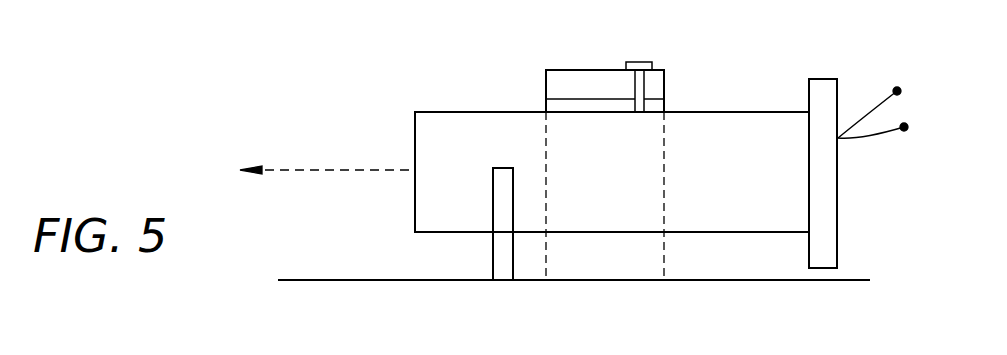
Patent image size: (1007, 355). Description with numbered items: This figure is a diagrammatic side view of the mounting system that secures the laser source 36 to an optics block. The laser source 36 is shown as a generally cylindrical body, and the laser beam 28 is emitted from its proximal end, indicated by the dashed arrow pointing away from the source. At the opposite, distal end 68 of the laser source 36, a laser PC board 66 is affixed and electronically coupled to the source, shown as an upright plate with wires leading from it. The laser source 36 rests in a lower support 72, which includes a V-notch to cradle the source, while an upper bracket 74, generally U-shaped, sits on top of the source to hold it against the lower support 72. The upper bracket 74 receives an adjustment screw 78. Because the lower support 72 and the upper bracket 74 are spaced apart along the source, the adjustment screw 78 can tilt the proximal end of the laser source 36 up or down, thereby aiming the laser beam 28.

The laser beam 28 is at (335, 170).
The laser source 36 is at (440, 120).
The laser PC board 66 is at (822, 88).
The distal end 68 is at (809, 246).
The lower support 72 is at (500, 259).
The upper bracket 74 is at (566, 70).
The adjustment screw 78 is at (638, 62).